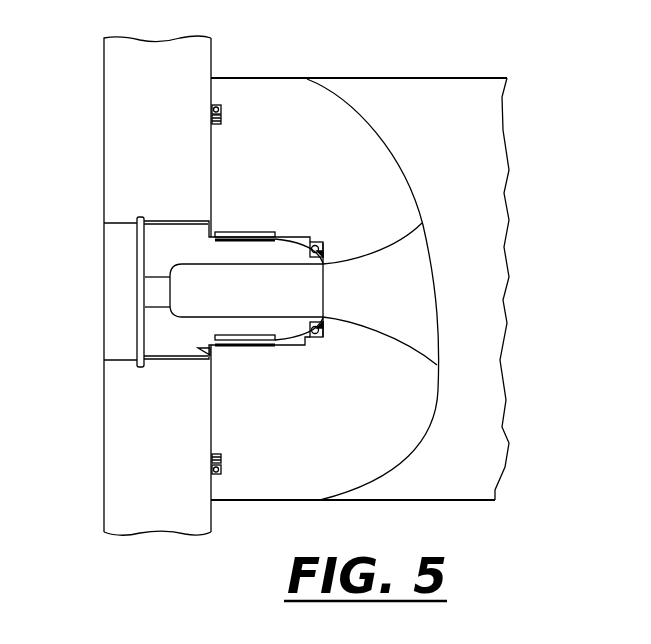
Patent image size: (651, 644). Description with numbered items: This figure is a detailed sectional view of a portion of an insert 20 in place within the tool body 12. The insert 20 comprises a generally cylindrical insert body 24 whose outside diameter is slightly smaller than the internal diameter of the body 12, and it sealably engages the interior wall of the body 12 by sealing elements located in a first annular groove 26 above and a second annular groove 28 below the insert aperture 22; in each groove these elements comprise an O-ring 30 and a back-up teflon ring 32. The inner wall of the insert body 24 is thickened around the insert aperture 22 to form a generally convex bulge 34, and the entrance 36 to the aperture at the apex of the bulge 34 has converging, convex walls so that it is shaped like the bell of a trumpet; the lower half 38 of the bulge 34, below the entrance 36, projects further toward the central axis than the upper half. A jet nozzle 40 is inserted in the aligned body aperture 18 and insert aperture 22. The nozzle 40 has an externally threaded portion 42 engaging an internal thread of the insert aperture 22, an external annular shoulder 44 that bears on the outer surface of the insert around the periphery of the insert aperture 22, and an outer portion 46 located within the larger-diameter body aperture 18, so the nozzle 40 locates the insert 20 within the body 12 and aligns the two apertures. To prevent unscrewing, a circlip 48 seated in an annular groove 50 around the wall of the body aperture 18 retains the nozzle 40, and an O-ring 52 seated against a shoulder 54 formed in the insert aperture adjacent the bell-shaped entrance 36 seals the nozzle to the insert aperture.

The tool body 12 is at (104, 162).
The body aperture 18 is at (118, 225).
The insert 20 is at (393, 63).
The insert aperture 22 is at (296, 234).
The insert body 24 is at (325, 77).
The first annular groove 26 is at (222, 108).
The second annular groove 28 is at (221, 468).
The O-ring 30 is at (212, 108).
The back-up teflon ring 32 is at (212, 120).
The convex bulge 34 is at (392, 182).
The entrance 36 is at (397, 282).
The lower half of the bulge 38 is at (402, 425).
The jet nozzle 40 is at (283, 330).
The externally threaded portion 42 is at (250, 230).
The external annular shoulder 44 is at (205, 352).
The outer portion 46 is at (162, 349).
The circlip 48 is at (138, 332).
The annular groove 50 is at (140, 368).
The O-ring 52 is at (318, 334).
The shoulder 54 is at (323, 329).